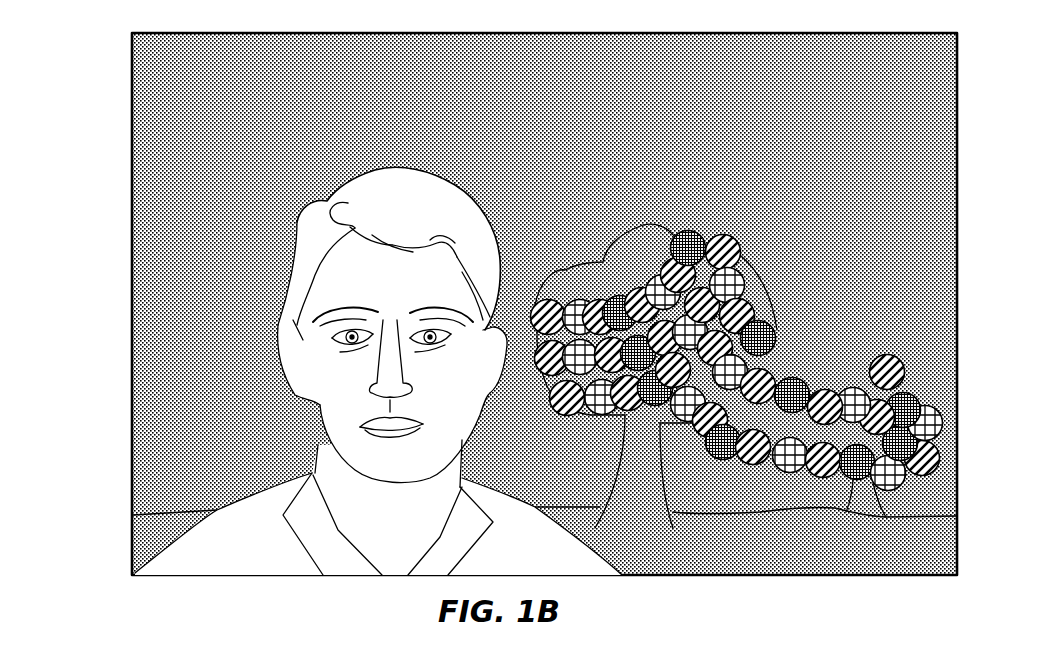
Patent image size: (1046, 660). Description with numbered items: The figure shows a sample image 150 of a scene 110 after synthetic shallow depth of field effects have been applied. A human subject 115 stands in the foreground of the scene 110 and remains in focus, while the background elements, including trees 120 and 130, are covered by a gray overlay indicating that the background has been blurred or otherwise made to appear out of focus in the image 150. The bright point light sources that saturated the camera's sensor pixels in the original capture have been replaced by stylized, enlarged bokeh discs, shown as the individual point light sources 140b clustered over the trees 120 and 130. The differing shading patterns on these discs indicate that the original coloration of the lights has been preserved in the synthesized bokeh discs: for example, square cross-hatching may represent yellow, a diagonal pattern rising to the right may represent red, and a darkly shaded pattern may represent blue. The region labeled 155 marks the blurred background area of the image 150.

The scene 110 is at (200, 33).
The human subject 115 is at (287, 258).
The tree 120 is at (600, 248).
The tree 130 is at (913, 345).
The individual point light sources 140b is at (803, 375).
The sample image 150 is at (86, 69).
The background 155 is at (203, 361).